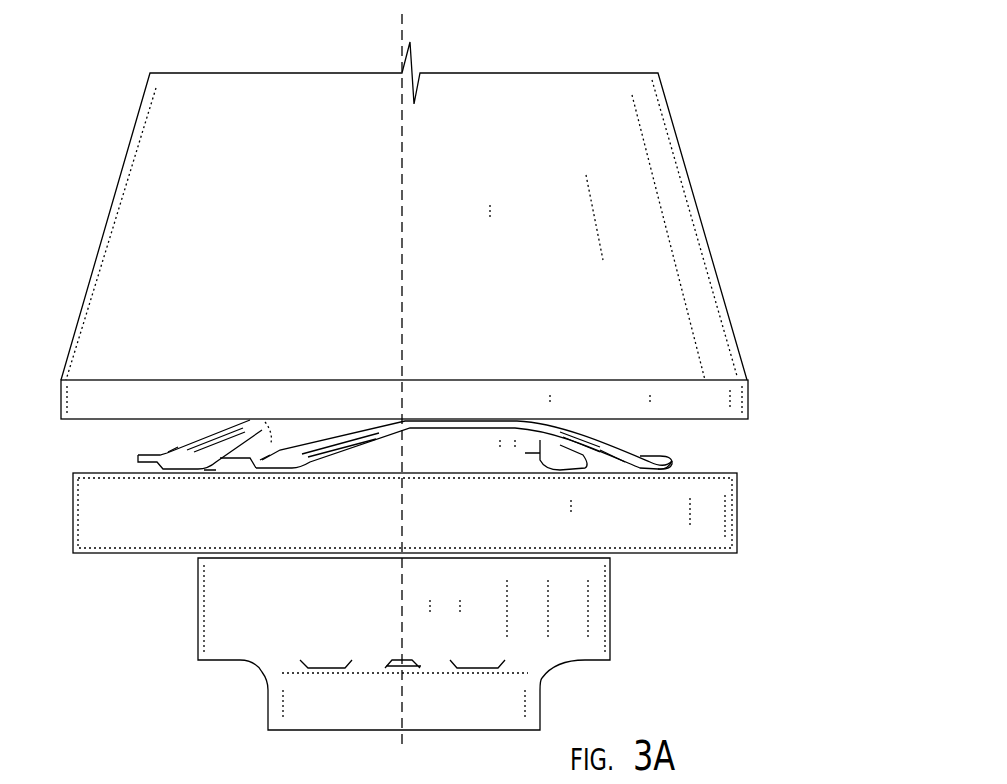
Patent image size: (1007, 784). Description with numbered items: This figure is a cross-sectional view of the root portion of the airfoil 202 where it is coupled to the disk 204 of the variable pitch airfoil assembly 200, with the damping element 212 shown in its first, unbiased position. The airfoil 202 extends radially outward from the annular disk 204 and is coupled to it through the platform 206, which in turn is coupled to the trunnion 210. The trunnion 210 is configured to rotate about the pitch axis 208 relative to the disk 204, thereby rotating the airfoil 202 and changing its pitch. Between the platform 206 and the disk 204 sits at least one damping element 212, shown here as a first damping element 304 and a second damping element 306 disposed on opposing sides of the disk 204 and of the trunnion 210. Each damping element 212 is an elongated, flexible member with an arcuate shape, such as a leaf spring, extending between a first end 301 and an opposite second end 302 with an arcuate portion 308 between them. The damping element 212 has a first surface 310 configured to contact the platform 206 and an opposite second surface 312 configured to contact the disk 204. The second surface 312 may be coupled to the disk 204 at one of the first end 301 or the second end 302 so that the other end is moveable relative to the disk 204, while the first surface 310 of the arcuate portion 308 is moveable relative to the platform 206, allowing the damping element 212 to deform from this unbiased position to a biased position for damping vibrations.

The variable pitch airfoil assembly 200 is at (750, 98).
The airfoil 202 is at (642, 91).
The disk 204 is at (83, 517).
The platform 206 is at (735, 403).
The pitch axis 208 is at (403, 22).
The trunnion 210 is at (616, 461).
The damping element 212 is at (187, 449).
The first end 301 is at (56, 429).
The second end 302 is at (773, 473).
The first damping element 304 is at (178, 445).
The second damping element 306 is at (648, 456).
The arcuate portion 308 is at (468, 421).
The first surface 310 is at (199, 448).
The second surface 312 is at (210, 474).